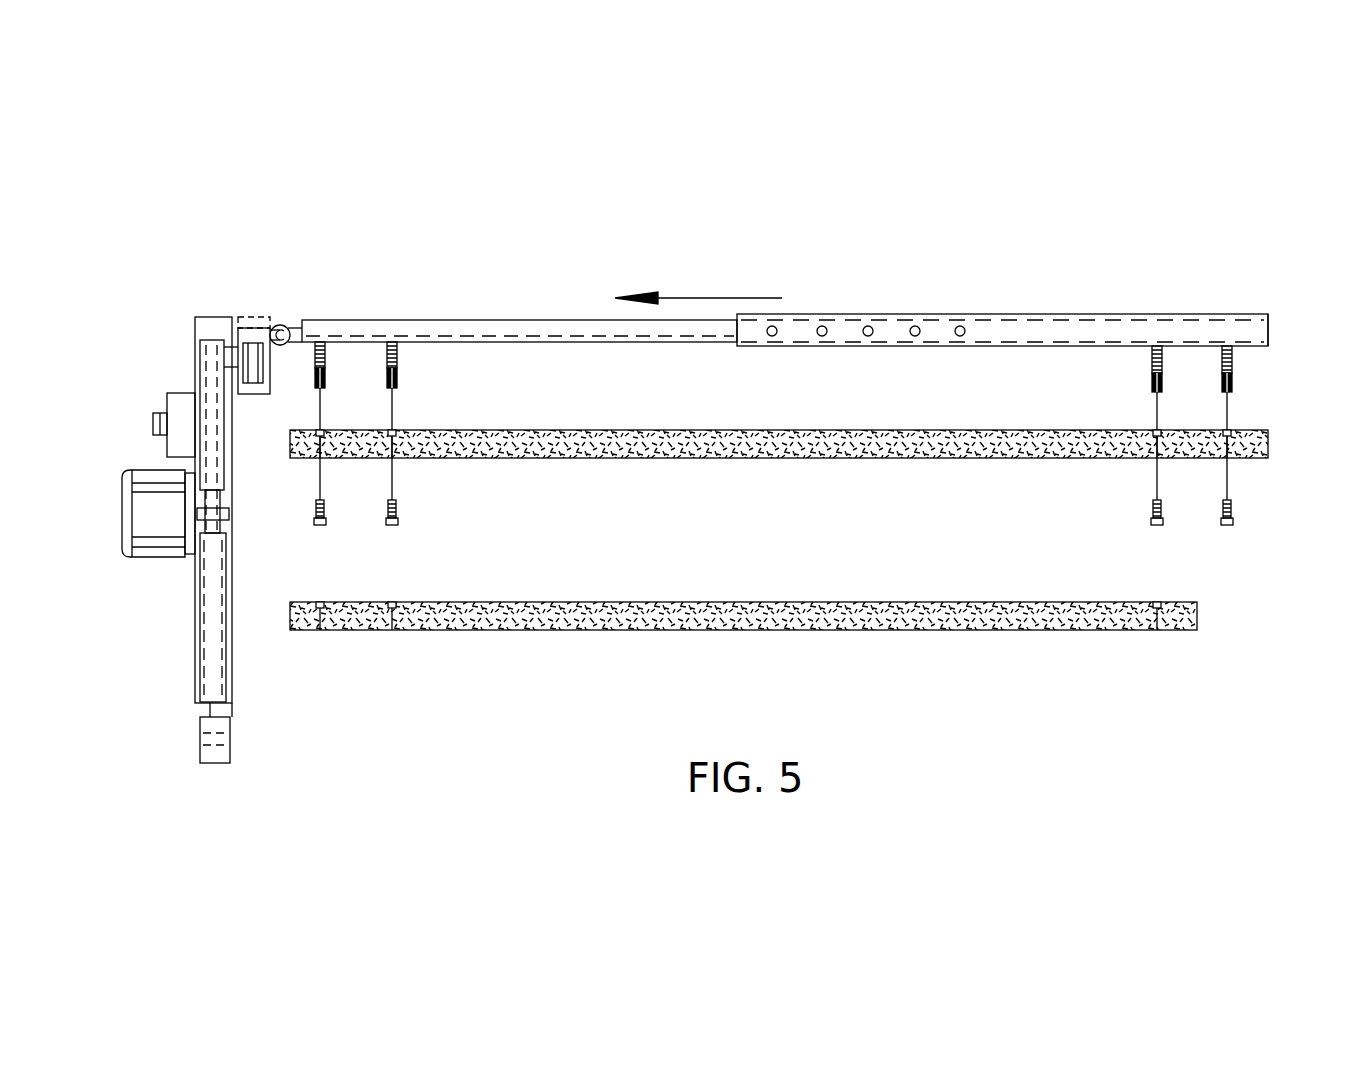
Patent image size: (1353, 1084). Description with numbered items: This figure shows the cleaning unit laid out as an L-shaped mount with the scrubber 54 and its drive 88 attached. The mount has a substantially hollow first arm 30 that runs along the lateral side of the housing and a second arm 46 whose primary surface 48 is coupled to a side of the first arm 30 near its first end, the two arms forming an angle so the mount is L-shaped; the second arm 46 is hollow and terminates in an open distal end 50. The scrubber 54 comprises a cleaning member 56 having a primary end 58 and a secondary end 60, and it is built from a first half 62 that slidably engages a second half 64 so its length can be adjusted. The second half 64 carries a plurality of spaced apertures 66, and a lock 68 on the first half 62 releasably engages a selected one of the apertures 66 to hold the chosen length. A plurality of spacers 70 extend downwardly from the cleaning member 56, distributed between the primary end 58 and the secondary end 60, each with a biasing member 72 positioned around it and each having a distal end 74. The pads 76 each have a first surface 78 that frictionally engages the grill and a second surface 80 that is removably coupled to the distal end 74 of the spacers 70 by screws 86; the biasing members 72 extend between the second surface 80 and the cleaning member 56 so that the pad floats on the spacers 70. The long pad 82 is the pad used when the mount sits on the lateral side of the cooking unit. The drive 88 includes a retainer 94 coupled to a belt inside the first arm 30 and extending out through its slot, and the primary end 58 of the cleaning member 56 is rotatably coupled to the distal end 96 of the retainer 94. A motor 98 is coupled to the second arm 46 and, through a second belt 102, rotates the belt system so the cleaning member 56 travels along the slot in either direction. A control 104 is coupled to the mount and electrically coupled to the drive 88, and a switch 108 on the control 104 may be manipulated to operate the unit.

The first arm 30 is at (258, 328).
The second arm 46 is at (167, 452).
The primary surface 48 is at (232, 655).
The distal end 50 is at (210, 703).
The scrubber 54 is at (713, 310).
The cleaning member 56 is at (880, 314).
The primary end 58 is at (292, 330).
The secondary end 60 is at (1268, 330).
The first half 62 is at (543, 320).
The second half 64 is at (997, 314).
The apertures 66 is at (772, 337).
The lock 68 is at (824, 326).
The spacers 70 is at (326, 372).
The biasing members 72 is at (326, 377).
The distal end 74 is at (318, 388).
The pads 76 is at (1268, 445).
The first surface 78 is at (533, 456).
The second surface 80 is at (640, 430).
The long pad 82 is at (1268, 431).
The screws 86 is at (320, 525).
The drive 88 is at (208, 328).
The retainer 94 is at (243, 328).
The distal end 96 is at (315, 341).
The motor 98 is at (122, 478).
The second belt 102 is at (215, 458).
The control 104 is at (182, 393).
The switch 108 is at (153, 420).